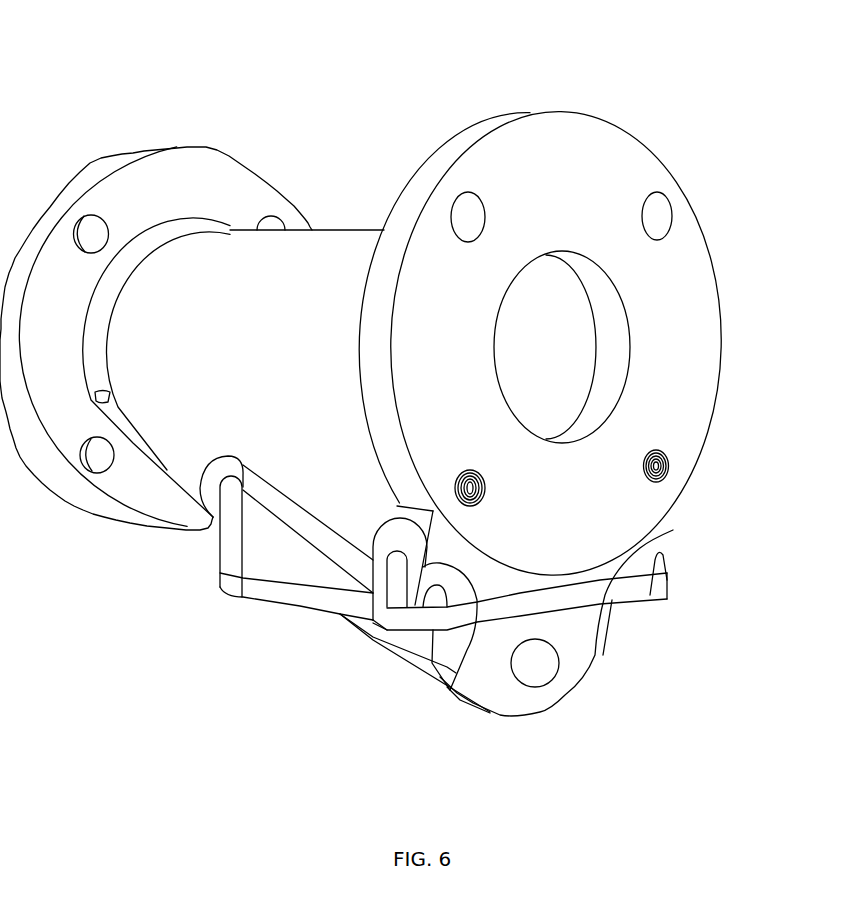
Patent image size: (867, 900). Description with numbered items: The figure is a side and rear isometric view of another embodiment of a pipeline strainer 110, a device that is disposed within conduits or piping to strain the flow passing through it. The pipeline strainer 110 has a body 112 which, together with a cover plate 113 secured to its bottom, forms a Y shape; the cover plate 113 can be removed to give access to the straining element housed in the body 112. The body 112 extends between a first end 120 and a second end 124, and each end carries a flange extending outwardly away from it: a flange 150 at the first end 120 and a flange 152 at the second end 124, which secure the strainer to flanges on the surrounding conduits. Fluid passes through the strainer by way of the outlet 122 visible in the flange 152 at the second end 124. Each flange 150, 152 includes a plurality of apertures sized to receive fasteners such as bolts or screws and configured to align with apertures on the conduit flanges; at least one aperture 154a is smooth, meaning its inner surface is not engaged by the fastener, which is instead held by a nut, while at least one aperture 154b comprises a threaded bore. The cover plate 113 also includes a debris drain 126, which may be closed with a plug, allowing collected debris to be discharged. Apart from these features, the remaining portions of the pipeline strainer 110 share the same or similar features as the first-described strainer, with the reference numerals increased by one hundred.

The pipeline strainer 110 is at (357, 169).
The body 112 is at (357, 237).
The cover plate 113 is at (437, 683).
The first end 120 is at (90, 167).
The outlet 122 is at (583, 343).
The second end 124 is at (512, 117).
The debris drain 126 is at (537, 667).
The flange 150 is at (150, 167).
The flange 152 is at (557, 125).
The smooth aperture 154a is at (477, 208).
The threaded aperture 154b is at (480, 496).